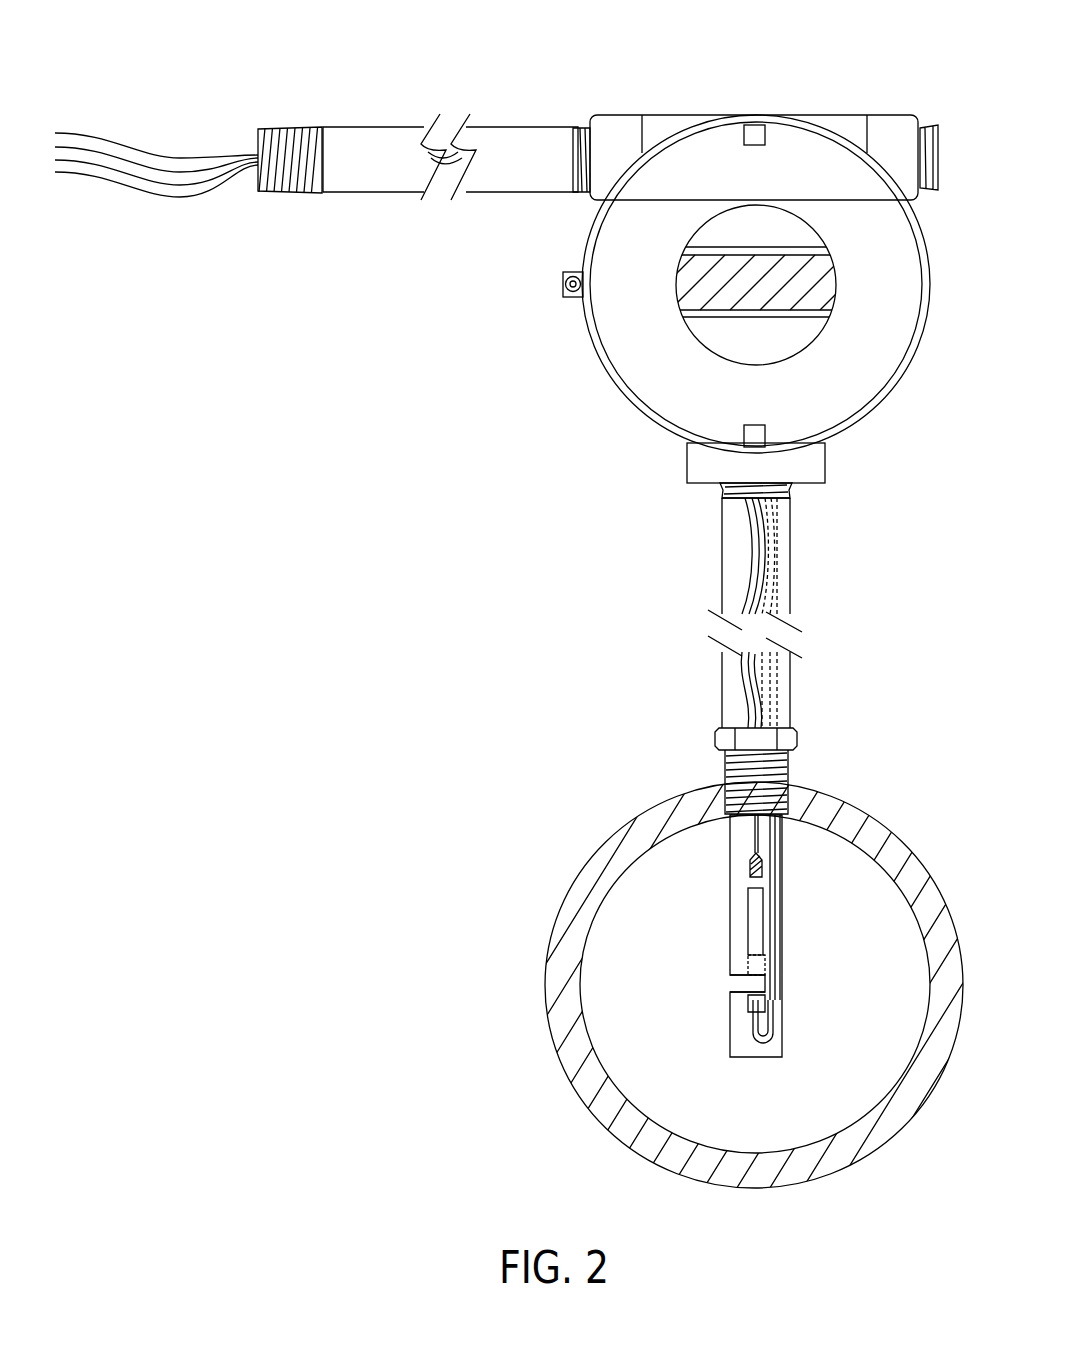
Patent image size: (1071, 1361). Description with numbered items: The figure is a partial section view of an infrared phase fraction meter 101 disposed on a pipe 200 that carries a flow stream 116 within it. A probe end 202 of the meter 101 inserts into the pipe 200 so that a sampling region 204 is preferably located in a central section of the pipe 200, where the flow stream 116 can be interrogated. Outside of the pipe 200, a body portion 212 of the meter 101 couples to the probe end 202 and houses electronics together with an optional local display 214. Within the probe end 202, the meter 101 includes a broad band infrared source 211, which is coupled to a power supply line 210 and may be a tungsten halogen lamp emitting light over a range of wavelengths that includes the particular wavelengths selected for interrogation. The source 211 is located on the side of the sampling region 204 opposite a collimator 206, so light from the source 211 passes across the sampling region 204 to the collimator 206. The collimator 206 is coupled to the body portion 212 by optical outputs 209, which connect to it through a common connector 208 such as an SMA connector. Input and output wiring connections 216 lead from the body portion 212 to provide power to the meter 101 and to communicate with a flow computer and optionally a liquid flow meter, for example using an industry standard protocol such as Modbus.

The phase fraction meter 101 is at (500, 627).
The flow stream 116 is at (755, 984).
The pipe 200 is at (568, 1015).
The probe end 202 is at (730, 865).
The sampling region 204 is at (740, 983).
The collimator 206 is at (748, 909).
The common connector 208 is at (760, 858).
The optical outputs 209 is at (750, 542).
The power supply line 210 is at (776, 950).
The broad band infrared source 211 is at (750, 998).
The body portion 212 is at (590, 349).
The local display 214 is at (773, 208).
The input and output wiring connections 216 is at (112, 133).